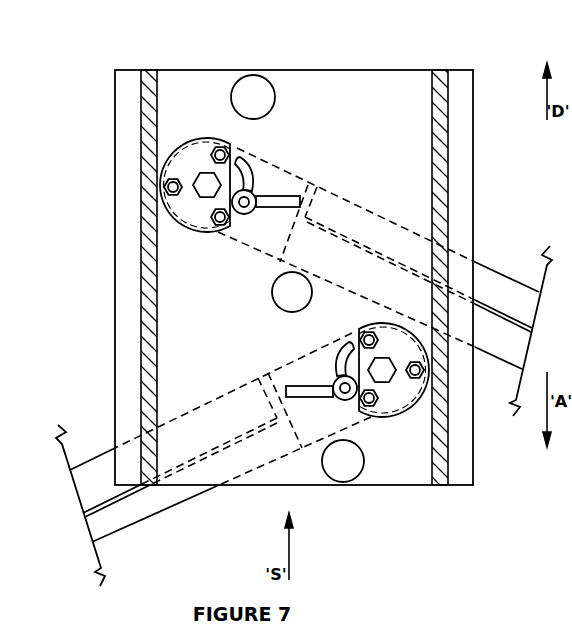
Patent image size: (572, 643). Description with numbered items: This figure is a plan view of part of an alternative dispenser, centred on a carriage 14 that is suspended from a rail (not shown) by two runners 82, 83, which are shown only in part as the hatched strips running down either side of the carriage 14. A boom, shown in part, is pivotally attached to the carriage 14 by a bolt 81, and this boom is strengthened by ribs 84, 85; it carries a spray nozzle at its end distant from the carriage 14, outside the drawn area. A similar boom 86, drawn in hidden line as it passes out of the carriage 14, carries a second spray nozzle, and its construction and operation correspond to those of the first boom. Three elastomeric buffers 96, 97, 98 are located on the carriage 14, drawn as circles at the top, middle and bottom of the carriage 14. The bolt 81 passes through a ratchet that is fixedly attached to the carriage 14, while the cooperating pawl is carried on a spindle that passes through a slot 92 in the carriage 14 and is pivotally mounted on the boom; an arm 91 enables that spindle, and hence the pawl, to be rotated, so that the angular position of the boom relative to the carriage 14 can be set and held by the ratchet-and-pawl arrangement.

The carriage 14 is at (128, 148).
The bolt 81 is at (382, 372).
The runner 82 is at (148, 398).
The runner 83 is at (440, 207).
The rib 84 is at (268, 375).
The rib 85 is at (173, 463).
The boom 86 is at (363, 200).
The arm 91 is at (312, 387).
The slot 92 is at (332, 345).
The elastomeric buffer 96 is at (290, 290).
The elastomeric buffer 97 is at (247, 92).
The elastomeric buffer 98 is at (345, 462).